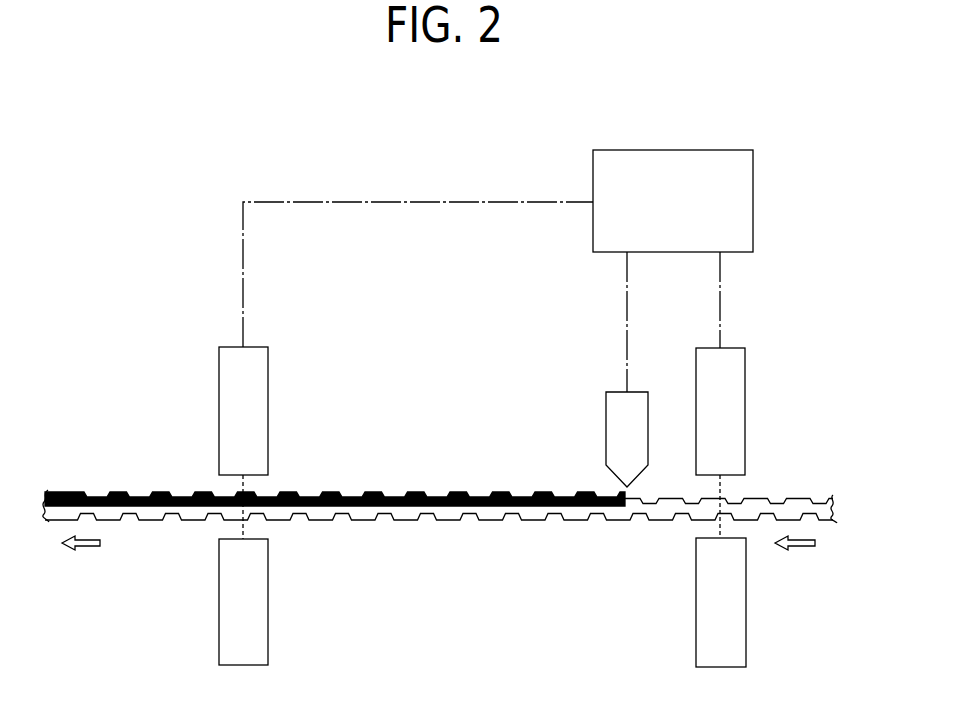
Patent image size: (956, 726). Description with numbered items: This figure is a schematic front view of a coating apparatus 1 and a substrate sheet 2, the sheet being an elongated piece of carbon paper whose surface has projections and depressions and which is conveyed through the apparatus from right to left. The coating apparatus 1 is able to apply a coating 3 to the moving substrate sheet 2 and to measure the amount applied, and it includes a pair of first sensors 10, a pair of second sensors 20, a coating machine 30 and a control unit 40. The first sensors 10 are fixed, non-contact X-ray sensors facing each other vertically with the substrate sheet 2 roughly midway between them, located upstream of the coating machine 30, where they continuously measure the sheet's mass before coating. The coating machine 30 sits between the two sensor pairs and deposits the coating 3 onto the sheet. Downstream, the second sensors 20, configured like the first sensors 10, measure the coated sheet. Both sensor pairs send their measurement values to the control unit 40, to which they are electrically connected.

The coating apparatus 1 is at (775, 116).
The substrate sheet 2 is at (793, 500).
The coating 3 is at (456, 491).
The first sensors 10 is at (745, 358).
The second sensors 20 is at (268, 357).
The coating machine 30 is at (636, 392).
The control unit 40 is at (753, 198).